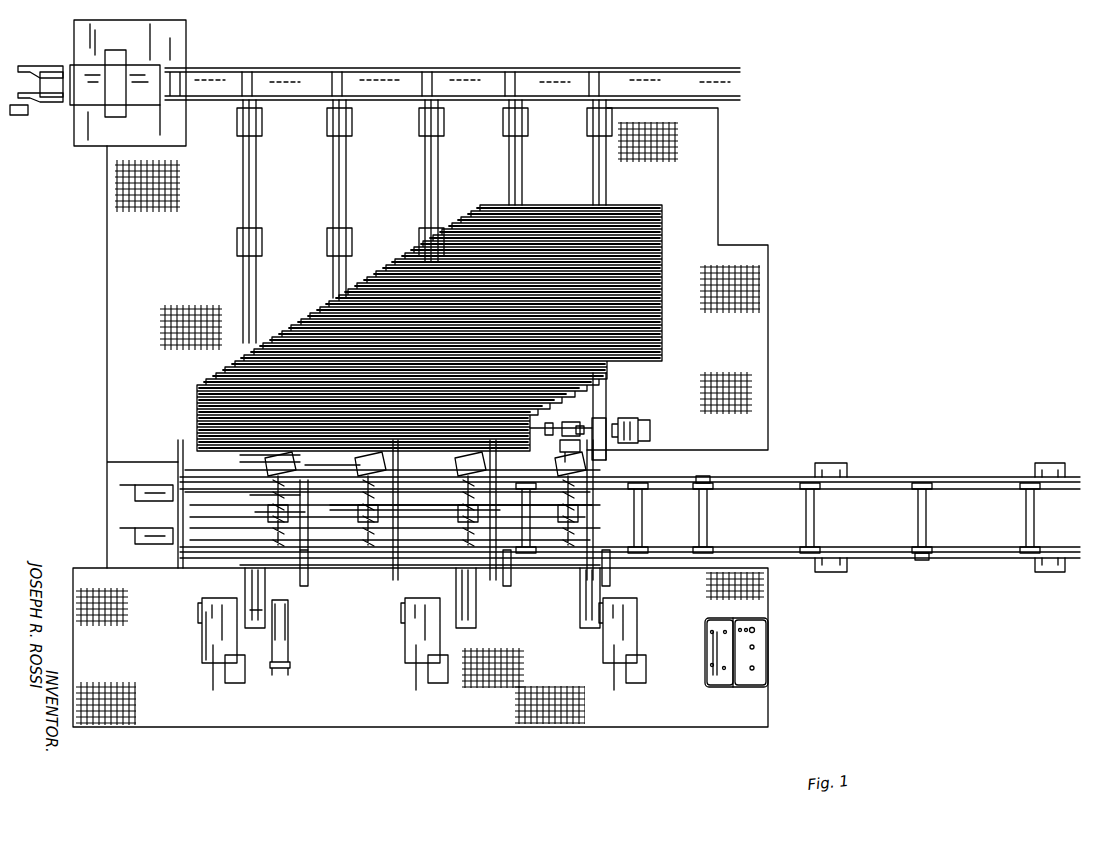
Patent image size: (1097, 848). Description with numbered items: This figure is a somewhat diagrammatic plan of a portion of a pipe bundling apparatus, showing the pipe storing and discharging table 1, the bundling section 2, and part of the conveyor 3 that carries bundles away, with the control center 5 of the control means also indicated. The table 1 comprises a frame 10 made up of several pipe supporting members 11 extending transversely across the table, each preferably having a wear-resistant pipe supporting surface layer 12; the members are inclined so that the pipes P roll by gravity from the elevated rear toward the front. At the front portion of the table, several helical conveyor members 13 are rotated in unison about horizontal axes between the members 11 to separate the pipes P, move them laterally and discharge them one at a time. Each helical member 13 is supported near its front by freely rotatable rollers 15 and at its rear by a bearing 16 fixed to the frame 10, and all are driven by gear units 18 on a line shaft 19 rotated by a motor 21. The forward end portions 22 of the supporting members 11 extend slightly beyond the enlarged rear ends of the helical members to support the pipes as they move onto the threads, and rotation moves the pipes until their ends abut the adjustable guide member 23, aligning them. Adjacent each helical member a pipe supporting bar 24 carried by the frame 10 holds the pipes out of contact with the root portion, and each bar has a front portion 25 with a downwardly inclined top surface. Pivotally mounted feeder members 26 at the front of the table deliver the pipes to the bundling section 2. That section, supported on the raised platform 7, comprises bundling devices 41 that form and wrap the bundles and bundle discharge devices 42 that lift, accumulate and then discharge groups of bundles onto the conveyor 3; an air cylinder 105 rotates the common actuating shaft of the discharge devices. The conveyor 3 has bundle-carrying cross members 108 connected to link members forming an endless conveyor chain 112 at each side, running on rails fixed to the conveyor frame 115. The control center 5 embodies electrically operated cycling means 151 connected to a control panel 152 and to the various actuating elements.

The table 1 is at (608, 186).
The bundling section 2 is at (475, 596).
The conveyor 3 is at (875, 478).
The control center 5 is at (766, 640).
The raised platform 7 is at (482, 728).
The frame 10 is at (322, 256).
The pipe supporting members 11 is at (242, 186).
The pipe supporting surface layer 12 is at (256, 198).
The helical conveyor members 13 is at (368, 490).
The rollers 15 is at (366, 512).
The bearing 16 is at (565, 446).
The gear units 18 is at (570, 424).
The line shaft 19 is at (551, 424).
The motor 21 is at (628, 418).
The forward end portions 22 is at (606, 455).
The guide member 23 is at (178, 492).
The pipe supporting bar 24 is at (492, 510).
The front portion 25 is at (392, 566).
The feeder members 26 is at (305, 582).
The bundling devices 41 is at (200, 636).
The bundle discharge devices 42 is at (246, 582).
The air cylinder 105 is at (288, 622).
The bundle-carrying cross members 108 is at (480, 498).
The endless conveyor chain 112 is at (705, 476).
The conveyor frame 115 is at (1046, 463).
The cycling means 151 is at (707, 648).
The control panel 152 is at (750, 675).
The pipes P is at (200, 410).